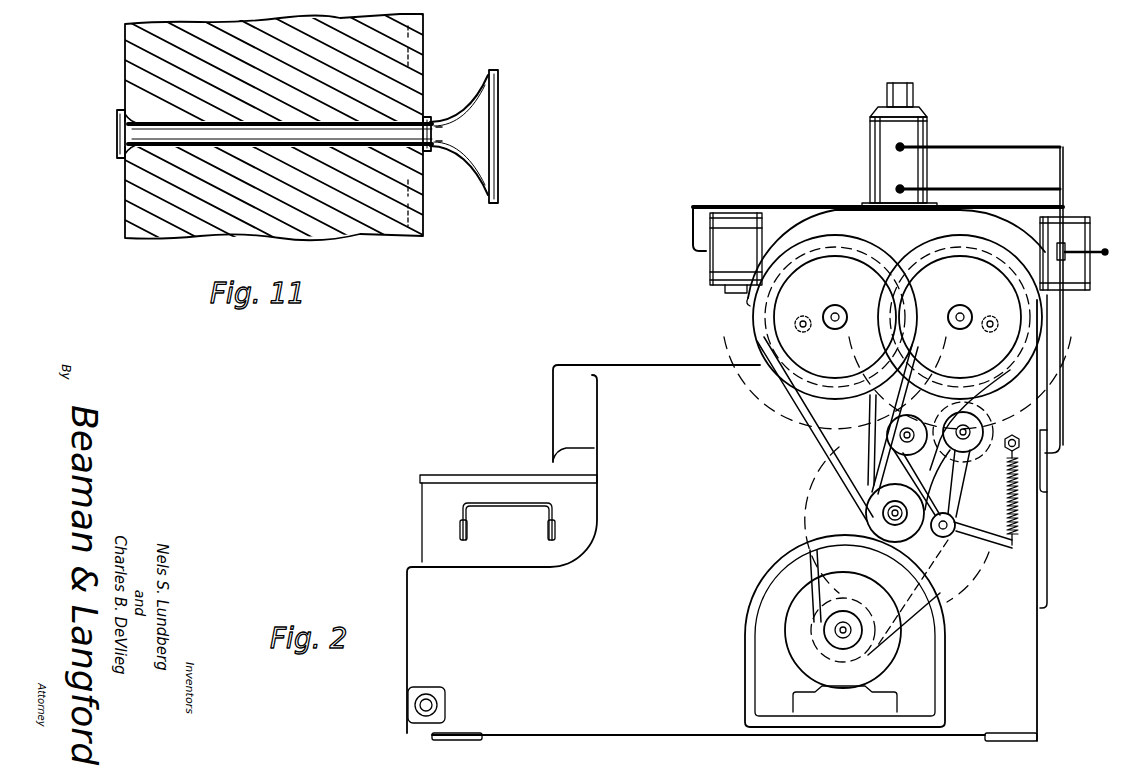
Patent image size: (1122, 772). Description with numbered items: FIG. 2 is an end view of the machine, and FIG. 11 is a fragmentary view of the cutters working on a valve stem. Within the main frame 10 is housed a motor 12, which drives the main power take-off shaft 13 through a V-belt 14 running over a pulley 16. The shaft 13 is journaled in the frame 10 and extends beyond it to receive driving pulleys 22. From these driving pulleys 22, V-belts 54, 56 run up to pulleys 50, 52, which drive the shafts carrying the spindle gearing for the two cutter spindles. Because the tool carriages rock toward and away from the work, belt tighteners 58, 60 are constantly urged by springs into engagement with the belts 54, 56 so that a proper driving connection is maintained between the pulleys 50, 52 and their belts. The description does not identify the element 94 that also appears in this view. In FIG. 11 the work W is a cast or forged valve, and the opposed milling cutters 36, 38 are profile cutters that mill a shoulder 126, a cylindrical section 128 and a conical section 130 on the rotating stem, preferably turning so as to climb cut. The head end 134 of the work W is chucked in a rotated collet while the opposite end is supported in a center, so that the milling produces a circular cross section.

In FIG. 11, the milling cutter 36 is at (135, 48).
In FIG. 11, the milling cutter 38 is at (135, 222).
In FIG. 11, the cylindrical section 128 is at (300, 131).
In FIG. 11, the conical section 130 is at (117, 133).
In FIG. 11, the head end 134 is at (499, 156).
In FIG. 11, the shoulder 126 is at (432, 150).
In FIG. 11, the work W is at (438, 122).
In FIG. 2, the cylinder 94 is at (910, 96).
In FIG. 2, the pulley 50 is at (846, 250).
In FIG. 2, the pulley 52 is at (940, 252).
In FIG. 2, the V-belt 54 is at (812, 434).
In FIG. 2, the belt tightener 58 is at (932, 432).
In FIG. 2, the V-belt 56 is at (985, 408).
In FIG. 2, the belt tightener 60 is at (1008, 498).
In FIG. 2, the driving pulleys 22 is at (866, 520).
In FIG. 2, the main power take-off shaft 13 is at (903, 522).
In FIG. 2, the pulley 16 is at (968, 578).
In FIG. 2, the V-belt 14 is at (910, 610).
In FIG. 2, the motor 12 is at (870, 664).
In FIG. 2, the main frame 10 is at (964, 666).